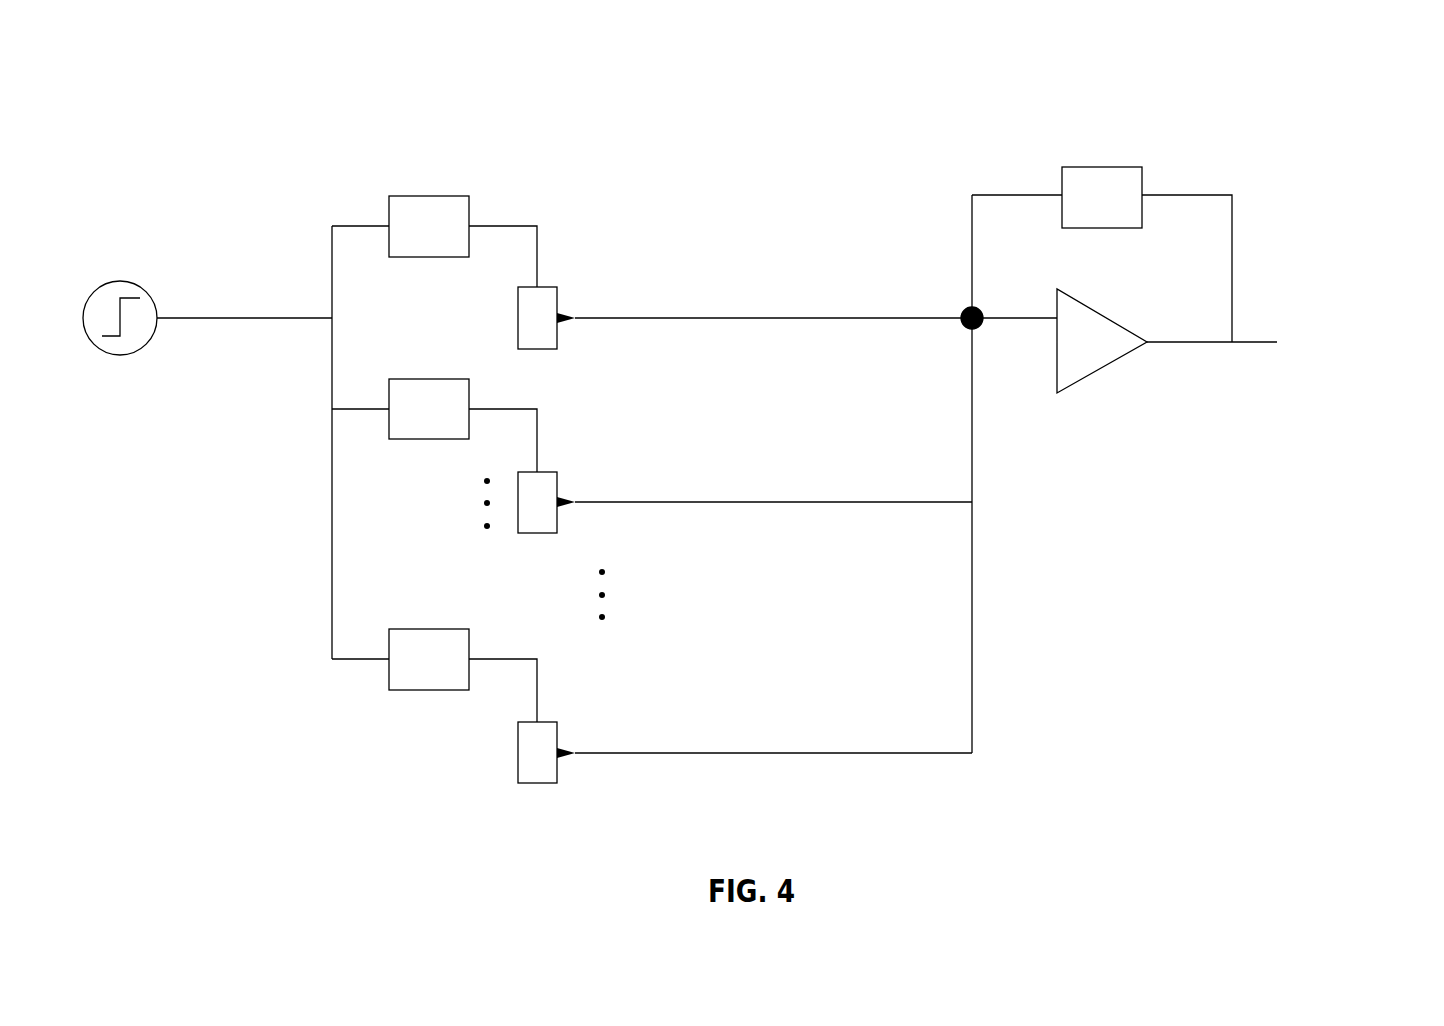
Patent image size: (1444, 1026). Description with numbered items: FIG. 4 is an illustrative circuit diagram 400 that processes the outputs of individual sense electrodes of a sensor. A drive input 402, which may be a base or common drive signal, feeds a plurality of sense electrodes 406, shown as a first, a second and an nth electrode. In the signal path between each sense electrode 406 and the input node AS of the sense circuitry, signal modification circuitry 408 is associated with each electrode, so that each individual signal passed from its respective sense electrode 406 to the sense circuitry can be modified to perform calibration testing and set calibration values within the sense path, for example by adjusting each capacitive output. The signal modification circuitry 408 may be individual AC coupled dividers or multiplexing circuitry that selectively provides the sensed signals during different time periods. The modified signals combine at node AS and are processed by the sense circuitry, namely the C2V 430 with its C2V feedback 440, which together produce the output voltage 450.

The pixel readout circuit 400 is at (171, 66).
The drive input 402 is at (121, 282).
The sense electrodes 406 is at (430, 196).
The signal modification circuitry 408 is at (543, 287).
The C2V 430 is at (1102, 369).
The C2V feedback 440 is at (1100, 167).
The output voltage Vout 450 is at (1338, 330).